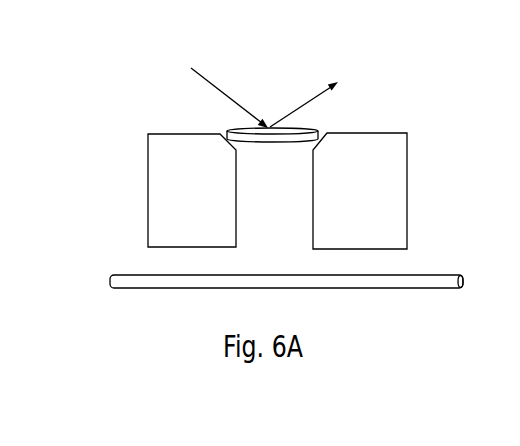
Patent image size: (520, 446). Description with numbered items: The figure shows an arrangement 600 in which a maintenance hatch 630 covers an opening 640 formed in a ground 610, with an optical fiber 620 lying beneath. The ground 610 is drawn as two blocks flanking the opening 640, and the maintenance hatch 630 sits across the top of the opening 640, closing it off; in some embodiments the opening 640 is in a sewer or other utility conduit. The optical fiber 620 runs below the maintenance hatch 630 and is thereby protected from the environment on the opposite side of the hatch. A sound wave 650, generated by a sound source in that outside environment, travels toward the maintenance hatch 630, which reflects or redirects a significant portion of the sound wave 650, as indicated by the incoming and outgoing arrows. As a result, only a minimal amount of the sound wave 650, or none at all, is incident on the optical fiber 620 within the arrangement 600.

The arrangement 600 is at (100, 105).
The ground 610 is at (187, 210).
The optical fiber 620 is at (463, 280).
The maintenance hatch 630 is at (307, 128).
The opening 640 is at (283, 207).
The sound wave 650 is at (215, 83).